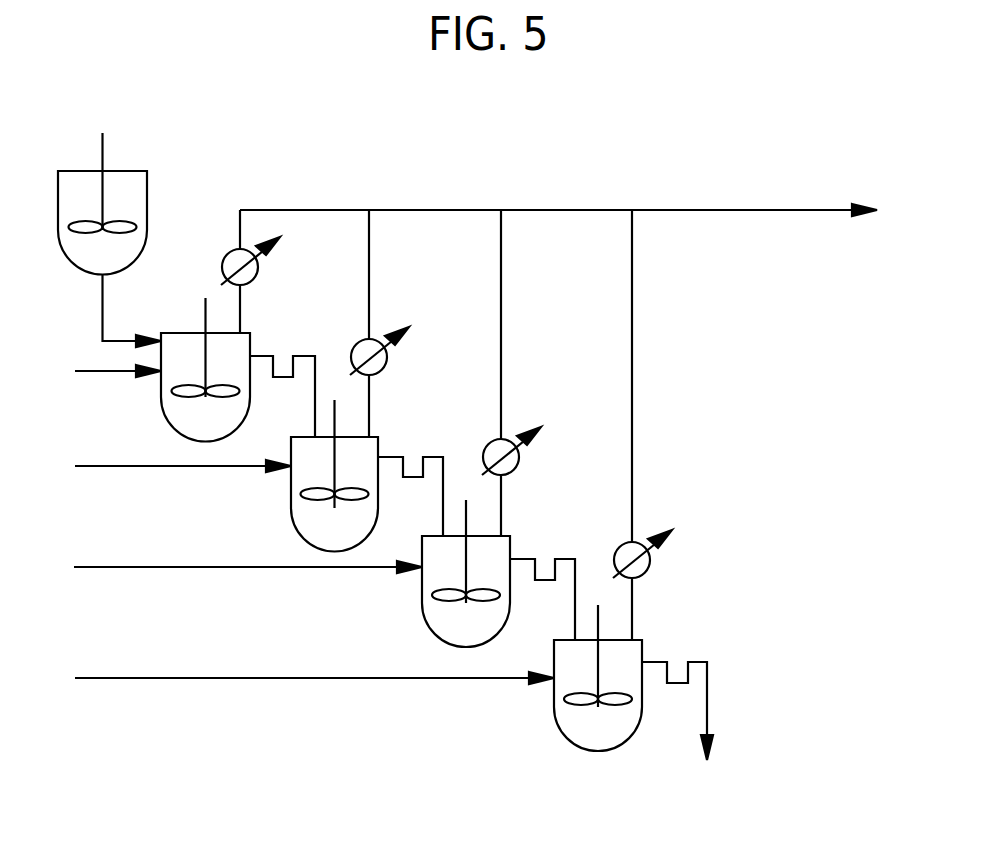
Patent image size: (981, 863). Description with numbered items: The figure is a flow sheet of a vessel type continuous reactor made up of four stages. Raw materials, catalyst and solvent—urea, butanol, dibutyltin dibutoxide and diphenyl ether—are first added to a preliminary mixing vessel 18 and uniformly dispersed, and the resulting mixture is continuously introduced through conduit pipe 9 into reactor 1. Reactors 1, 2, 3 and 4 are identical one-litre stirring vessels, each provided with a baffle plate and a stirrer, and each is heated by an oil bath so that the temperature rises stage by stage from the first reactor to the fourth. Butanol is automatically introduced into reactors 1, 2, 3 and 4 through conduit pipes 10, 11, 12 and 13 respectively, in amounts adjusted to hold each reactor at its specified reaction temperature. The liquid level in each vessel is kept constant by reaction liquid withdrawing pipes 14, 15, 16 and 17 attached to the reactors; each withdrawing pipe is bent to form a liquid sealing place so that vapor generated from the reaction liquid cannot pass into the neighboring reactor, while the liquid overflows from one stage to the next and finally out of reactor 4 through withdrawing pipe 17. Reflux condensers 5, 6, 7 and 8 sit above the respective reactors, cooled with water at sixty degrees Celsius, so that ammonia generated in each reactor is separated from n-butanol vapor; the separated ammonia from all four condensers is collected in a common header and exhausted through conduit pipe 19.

The reactor 1 is at (175, 428).
The reactor 2 is at (298, 525).
The reactor 3 is at (440, 636).
The reactor 4 is at (578, 741).
The reflux condenser 5 is at (258, 266).
The reflux condenser 6 is at (387, 357).
The reflux condenser 7 is at (519, 459).
The reflux condenser 8 is at (650, 565).
The conduit pipe 9 is at (101, 316).
The conduit pipe 10 is at (100, 372).
The conduit pipe 11 is at (100, 467).
The conduit pipe 12 is at (115, 568).
The conduit pipe 13 is at (118, 679).
The reaction liquid withdrawing pipe 14 is at (265, 353).
The reaction liquid withdrawing pipe 15 is at (430, 452).
The reaction liquid withdrawing pipe 16 is at (560, 557).
The reaction liquid withdrawing pipe 17 is at (690, 660).
The preliminary mixing vessel 18 is at (131, 203).
The conduit pipe 19 is at (781, 211).